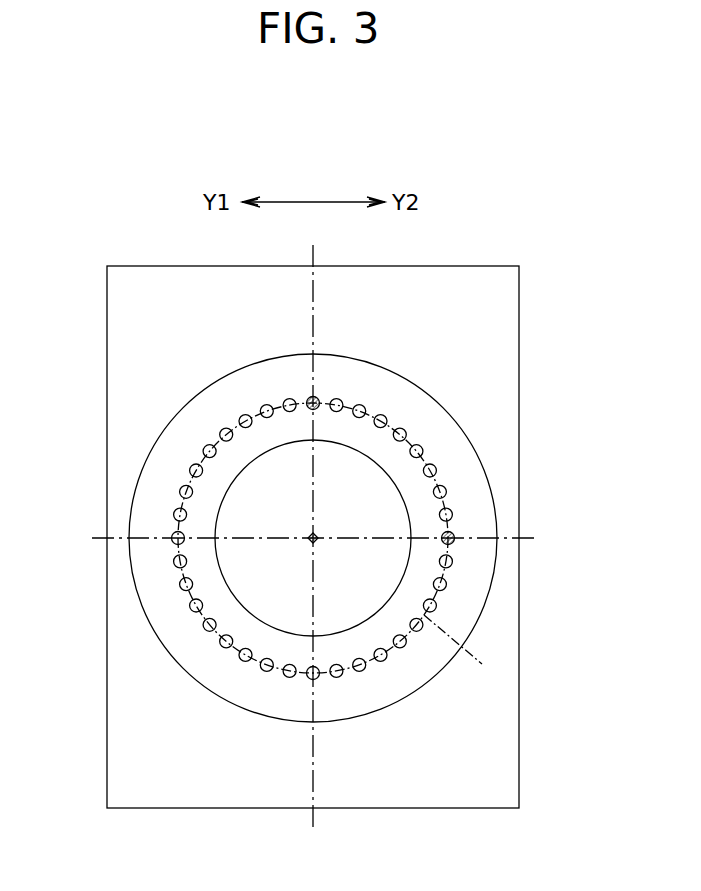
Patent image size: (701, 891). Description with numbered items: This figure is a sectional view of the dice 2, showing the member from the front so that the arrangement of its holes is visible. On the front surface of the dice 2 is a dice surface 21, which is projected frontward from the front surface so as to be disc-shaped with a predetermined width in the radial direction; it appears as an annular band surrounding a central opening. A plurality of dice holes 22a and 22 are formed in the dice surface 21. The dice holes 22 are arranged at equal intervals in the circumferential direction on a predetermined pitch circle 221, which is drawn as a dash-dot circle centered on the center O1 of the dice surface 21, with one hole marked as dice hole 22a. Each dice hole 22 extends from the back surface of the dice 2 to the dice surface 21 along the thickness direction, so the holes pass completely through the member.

The dice 2 is at (452, 266).
The dice surface 21 is at (452, 457).
The dice holes 22 is at (399, 433).
The dice hole 22a is at (448, 538).
The pitch circle 221 is at (486, 662).
The center O1 is at (313, 538).